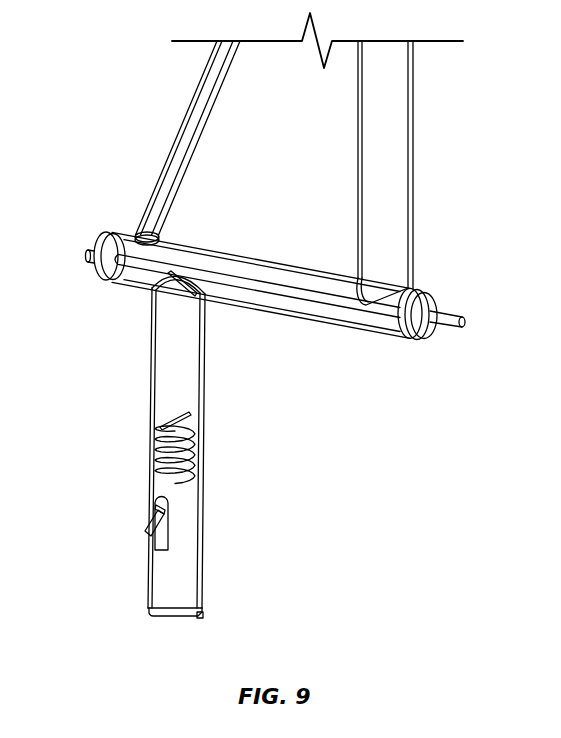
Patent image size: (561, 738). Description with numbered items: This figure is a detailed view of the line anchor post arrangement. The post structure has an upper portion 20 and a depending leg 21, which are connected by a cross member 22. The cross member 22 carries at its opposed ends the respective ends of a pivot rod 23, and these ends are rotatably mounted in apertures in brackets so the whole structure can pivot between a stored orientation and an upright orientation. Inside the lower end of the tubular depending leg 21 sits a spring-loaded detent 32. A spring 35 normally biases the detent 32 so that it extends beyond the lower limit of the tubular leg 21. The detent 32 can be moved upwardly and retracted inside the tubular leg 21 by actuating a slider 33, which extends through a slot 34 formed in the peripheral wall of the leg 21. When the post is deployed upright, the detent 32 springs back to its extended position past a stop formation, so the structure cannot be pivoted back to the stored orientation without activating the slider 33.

The upper portion 20 is at (413, 148).
The depending leg 21 is at (205, 400).
The cross member 22 is at (264, 258).
The pivot rod 23 is at (88, 254).
The detent 32 is at (201, 616).
The slider 33 is at (147, 535).
The slot 34 is at (157, 514).
The spring 35 is at (194, 453).